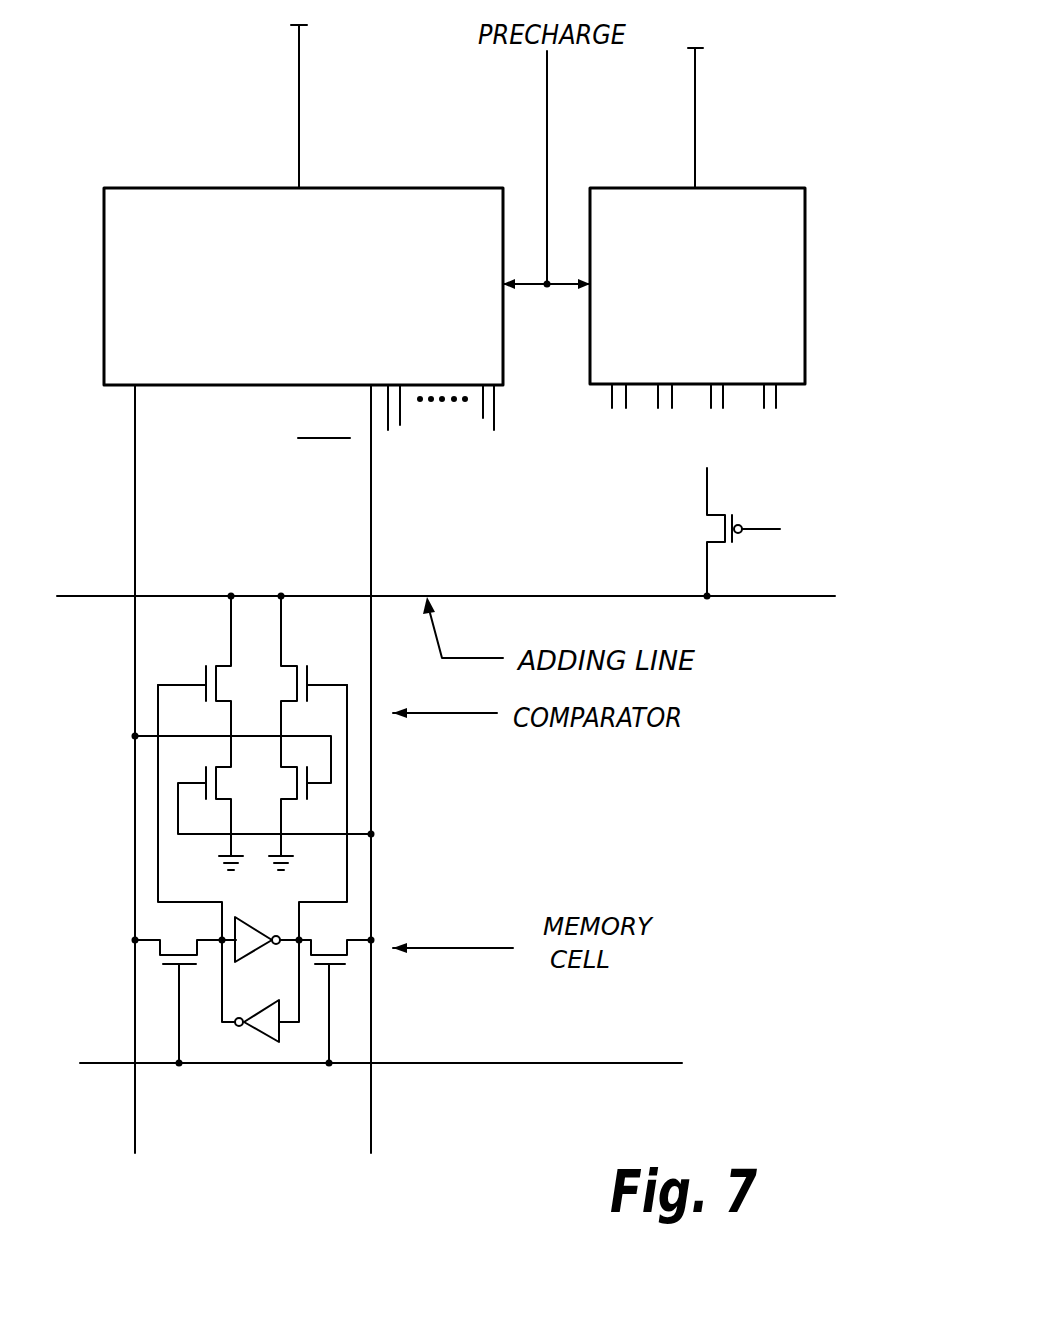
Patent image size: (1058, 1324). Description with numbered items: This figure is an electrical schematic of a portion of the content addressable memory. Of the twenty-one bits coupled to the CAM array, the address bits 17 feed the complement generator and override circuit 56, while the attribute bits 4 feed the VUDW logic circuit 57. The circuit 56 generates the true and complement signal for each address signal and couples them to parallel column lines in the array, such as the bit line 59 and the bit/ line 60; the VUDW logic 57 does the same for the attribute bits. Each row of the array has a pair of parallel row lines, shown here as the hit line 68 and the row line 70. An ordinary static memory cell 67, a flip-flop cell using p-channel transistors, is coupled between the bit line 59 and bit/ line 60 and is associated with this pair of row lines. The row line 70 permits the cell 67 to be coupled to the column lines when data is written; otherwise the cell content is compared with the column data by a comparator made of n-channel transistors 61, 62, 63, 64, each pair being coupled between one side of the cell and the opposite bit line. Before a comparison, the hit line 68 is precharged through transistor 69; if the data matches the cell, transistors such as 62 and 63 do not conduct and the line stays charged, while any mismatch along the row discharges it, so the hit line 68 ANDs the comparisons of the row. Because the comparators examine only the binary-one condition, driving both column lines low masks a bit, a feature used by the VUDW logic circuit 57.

The attribute bits 4 is at (713, 101).
The address bits 17 is at (323, 96).
The complement generator and override circuit 56 is at (303, 309).
The VUDW logic circuit 57 is at (697, 298).
The bit line 59 is at (135, 500).
The bit/ line 60 is at (371, 518).
The comparator transistor 61 is at (227, 683).
The comparator transistor 62 is at (227, 793).
The comparator transistor 63 is at (288, 685).
The comparator transistor 64 is at (288, 785).
The memory cell 67 is at (268, 976).
The hit line 68 is at (800, 598).
The precharge transistor 69 is at (707, 512).
The row line 70 is at (460, 1063).